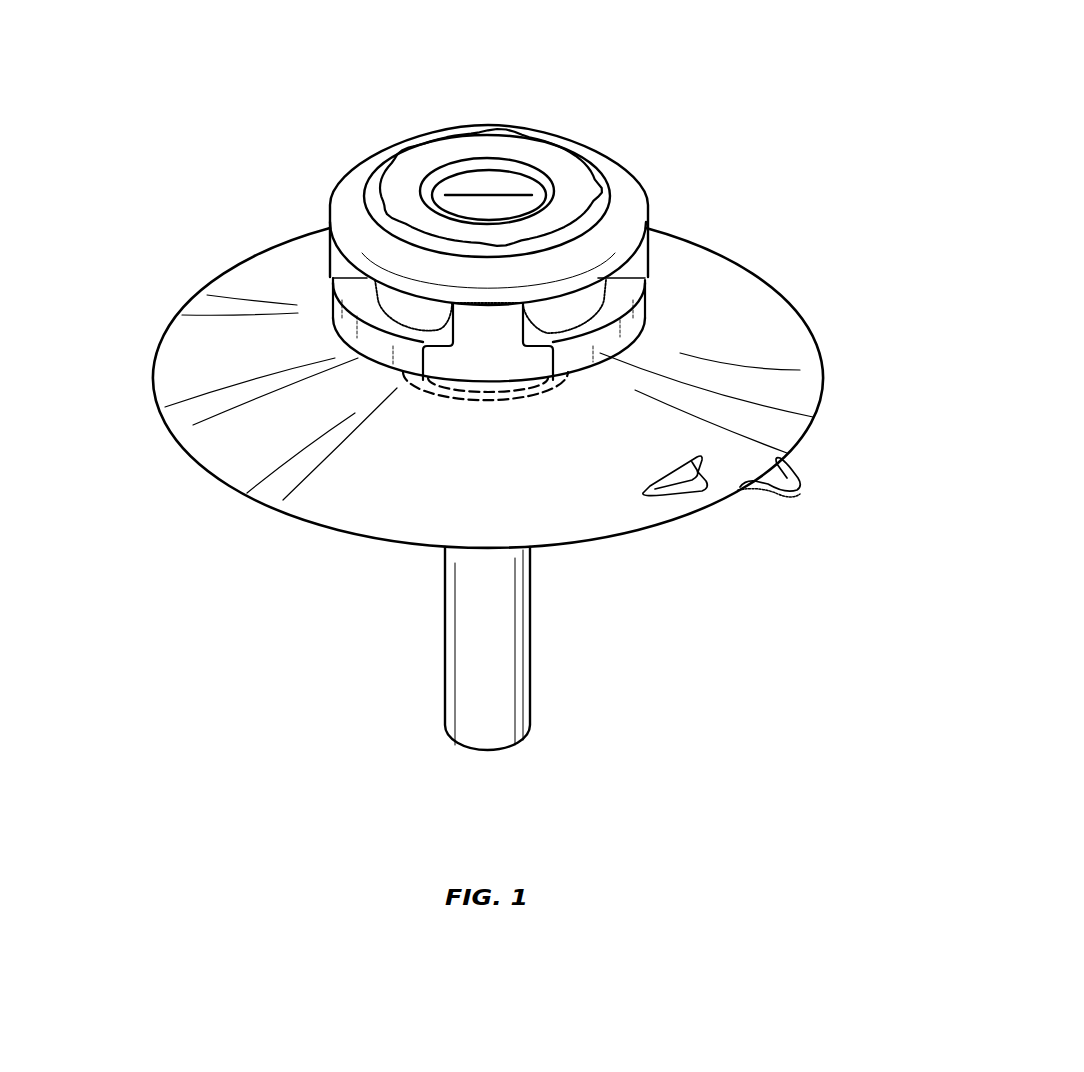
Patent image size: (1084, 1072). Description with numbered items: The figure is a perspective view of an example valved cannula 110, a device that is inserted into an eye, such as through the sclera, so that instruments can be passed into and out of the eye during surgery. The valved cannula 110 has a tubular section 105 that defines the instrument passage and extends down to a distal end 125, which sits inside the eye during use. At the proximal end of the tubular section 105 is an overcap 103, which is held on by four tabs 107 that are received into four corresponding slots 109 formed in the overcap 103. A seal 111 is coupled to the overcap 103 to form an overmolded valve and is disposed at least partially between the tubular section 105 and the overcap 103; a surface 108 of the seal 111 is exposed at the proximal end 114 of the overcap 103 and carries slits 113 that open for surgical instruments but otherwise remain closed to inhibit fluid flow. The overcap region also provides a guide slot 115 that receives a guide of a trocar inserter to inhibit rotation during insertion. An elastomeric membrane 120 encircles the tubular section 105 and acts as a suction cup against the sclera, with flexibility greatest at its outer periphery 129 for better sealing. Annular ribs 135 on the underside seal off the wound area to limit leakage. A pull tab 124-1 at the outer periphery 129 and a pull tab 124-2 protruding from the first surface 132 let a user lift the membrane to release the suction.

The overcap 103 is at (400, 70).
The tubular section 105 is at (445, 614).
The tabs 107 is at (403, 308).
The surface of the seal 108 is at (474, 178).
The slots 109 is at (590, 328).
The valved cannula 110 is at (760, 209).
The seal 111 is at (572, 187).
The slits 113 is at (508, 192).
The proximal end of the overcap 114 is at (649, 192).
The guide slot 115 is at (400, 148).
The elastomeric membrane 120 is at (346, 534).
The pull tab 124-1 is at (798, 481).
The pull tab 124-2 is at (700, 472).
The distal end of the tubular section 125 is at (530, 710).
The outer periphery 129 is at (148, 344).
The first surface 132 is at (788, 356).
The annular ribs 135 is at (539, 392).